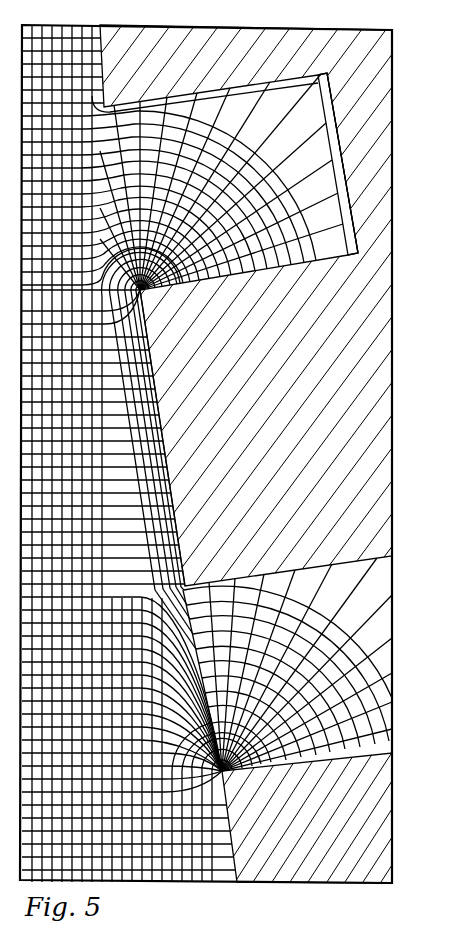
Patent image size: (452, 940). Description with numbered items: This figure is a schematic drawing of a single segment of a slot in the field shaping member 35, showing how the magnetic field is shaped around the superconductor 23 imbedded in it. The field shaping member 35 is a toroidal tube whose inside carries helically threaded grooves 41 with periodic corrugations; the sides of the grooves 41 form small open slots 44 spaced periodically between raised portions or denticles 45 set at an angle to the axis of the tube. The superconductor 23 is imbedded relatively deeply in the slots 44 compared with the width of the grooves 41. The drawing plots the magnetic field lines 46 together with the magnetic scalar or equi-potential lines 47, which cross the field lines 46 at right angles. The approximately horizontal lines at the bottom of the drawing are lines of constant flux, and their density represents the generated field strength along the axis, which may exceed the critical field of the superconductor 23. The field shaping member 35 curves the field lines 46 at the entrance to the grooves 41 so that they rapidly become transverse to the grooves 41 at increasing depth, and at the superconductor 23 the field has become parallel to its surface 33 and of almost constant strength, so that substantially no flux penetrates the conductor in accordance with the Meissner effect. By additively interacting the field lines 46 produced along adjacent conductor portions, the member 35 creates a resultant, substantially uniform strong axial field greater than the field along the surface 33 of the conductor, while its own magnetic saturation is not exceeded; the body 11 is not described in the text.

The body 11 is at (368, 239).
The superconductor 23 is at (357, 198).
The surface of the conductor 33 is at (334, 136).
The field shaping member 35 is at (366, 83).
The grooves 41 is at (152, 443).
The slots 44 is at (260, 256).
The denticles 45 is at (288, 392).
The magnetic field lines 46 is at (247, 272).
The equi-potential lines 47 is at (153, 493).